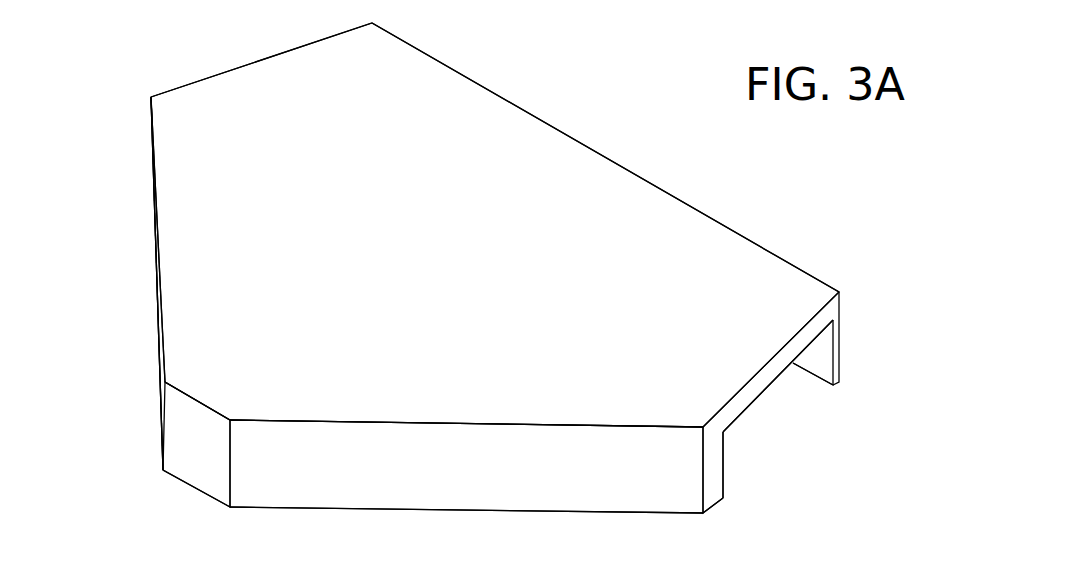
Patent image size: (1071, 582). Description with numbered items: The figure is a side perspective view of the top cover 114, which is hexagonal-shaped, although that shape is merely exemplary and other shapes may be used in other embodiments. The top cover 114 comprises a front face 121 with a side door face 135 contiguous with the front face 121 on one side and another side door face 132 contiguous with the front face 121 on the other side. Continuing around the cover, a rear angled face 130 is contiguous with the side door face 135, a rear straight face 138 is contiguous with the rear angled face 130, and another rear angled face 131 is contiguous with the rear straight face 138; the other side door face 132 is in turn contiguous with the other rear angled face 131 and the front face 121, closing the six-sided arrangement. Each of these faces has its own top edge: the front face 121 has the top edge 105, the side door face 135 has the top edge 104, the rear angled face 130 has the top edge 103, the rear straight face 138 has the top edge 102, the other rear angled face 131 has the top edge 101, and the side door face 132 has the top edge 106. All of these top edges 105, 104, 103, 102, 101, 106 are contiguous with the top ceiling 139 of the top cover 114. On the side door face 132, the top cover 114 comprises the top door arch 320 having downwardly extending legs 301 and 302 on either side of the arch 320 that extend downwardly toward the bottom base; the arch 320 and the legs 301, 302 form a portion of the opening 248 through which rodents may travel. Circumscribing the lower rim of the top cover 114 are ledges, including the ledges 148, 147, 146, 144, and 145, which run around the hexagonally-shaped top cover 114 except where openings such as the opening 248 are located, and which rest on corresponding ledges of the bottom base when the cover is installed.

The top edge 101 is at (480, 423).
The top edge 102 is at (195, 400).
The top edge 103 is at (153, 195).
The top edge 104 is at (292, 48).
The top edge 105 is at (718, 220).
The top edge 106 is at (765, 362).
The top cover 114 is at (596, 104).
The front face 121 is at (641, 173).
The rear angled face 130 is at (147, 280).
The rear angled face 131 is at (479, 489).
The side door face 132 is at (836, 312).
The side door face 135 is at (179, 83).
The rear straight face 138 is at (217, 462).
The top ceiling 139 is at (458, 253).
The ledge 144 is at (713, 507).
The ledge 145 is at (833, 385).
The ledge 146 is at (382, 510).
The ledge 147 is at (197, 490).
The ledge 148 is at (158, 337).
The opening 248 is at (723, 452).
The leg 301 is at (716, 472).
The leg 302 is at (837, 352).
The top door arch 320 is at (752, 395).